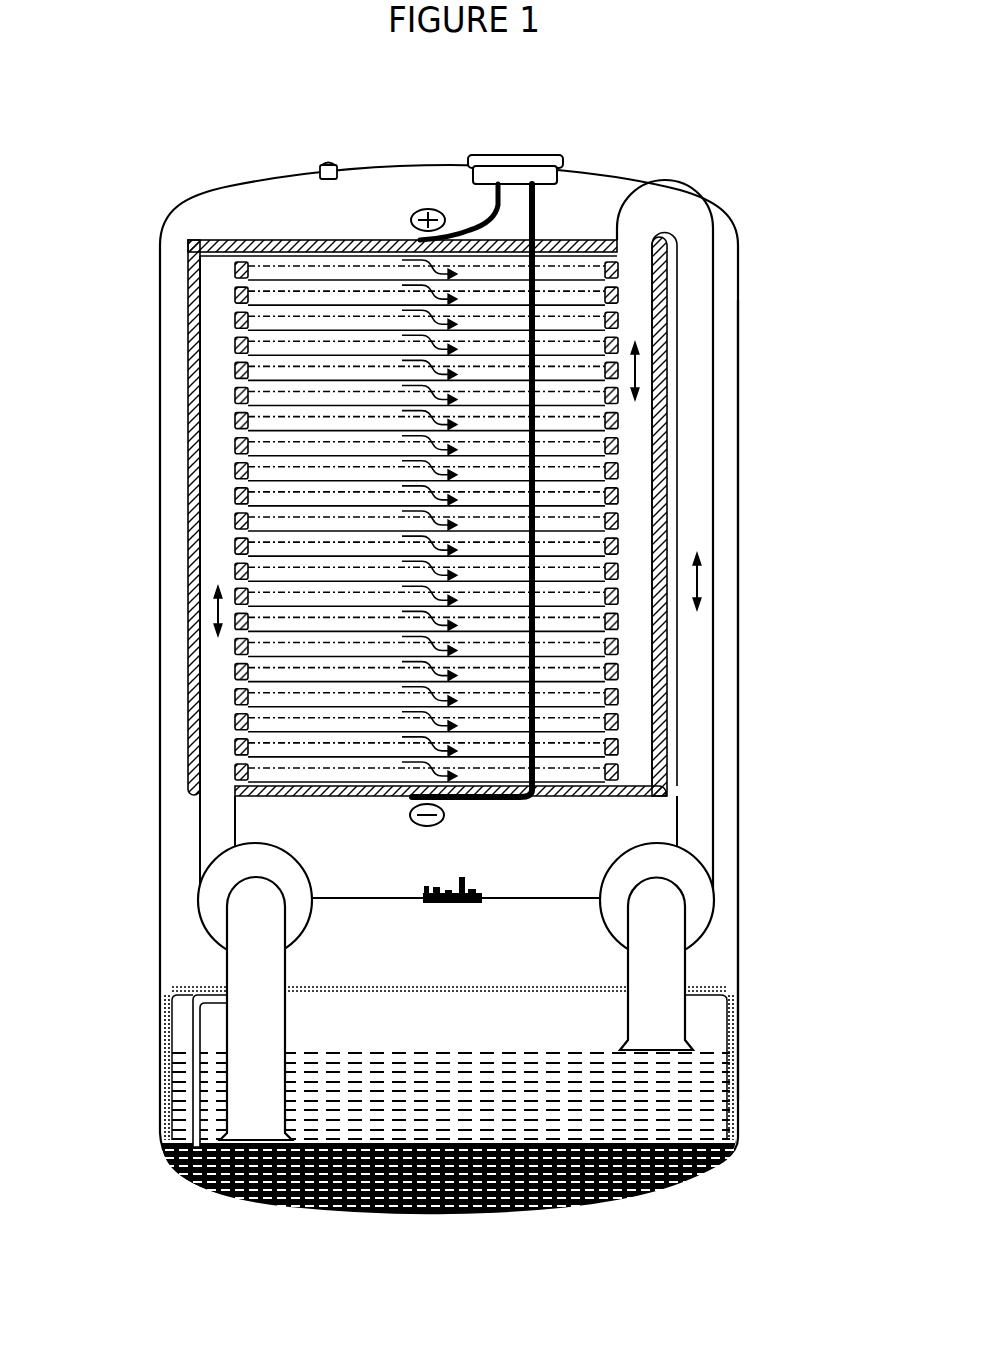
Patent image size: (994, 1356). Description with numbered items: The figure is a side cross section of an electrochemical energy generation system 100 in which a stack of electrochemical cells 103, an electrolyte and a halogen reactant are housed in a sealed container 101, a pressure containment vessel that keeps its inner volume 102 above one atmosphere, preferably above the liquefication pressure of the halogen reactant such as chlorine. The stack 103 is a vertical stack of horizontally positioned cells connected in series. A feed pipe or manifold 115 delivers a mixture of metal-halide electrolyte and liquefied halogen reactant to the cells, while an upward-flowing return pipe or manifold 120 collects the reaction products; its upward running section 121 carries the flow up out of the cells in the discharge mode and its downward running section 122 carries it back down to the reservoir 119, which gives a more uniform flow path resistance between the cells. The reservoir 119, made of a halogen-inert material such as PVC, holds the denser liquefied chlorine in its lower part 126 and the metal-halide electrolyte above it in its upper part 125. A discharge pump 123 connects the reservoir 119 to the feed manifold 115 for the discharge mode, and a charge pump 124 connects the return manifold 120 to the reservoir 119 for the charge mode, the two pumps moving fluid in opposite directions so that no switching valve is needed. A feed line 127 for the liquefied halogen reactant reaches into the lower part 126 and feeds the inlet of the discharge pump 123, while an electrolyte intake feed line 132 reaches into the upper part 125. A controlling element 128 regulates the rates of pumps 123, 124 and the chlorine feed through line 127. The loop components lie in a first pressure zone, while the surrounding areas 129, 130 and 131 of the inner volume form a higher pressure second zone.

The electrochemical energy generation system 100 is at (470, 1289).
The sealed container 101 is at (713, 210).
The inner volume 102 is at (303, 197).
The stack of electrochemical cells 103 is at (268, 292).
The feed pipe or manifold 115 is at (222, 525).
The reservoir 119 is at (173, 1010).
The return pipe or manifold 120 is at (760, 539).
The upward running section 121 is at (632, 427).
The downward running section 122 is at (692, 455).
The discharge pump 123 is at (252, 904).
The charge pump 124 is at (657, 905).
The upper part of the reservoir 125 is at (408, 1097).
The lower part of the reservoir 126 is at (408, 1152).
The feed line for the liquefied halogen reactant 127 is at (198, 1056).
The controlling element 128 is at (453, 903).
The area of the inner volume 129 is at (177, 415).
The area of the inner volume 130 is at (232, 210).
The area of the inner volume 131 is at (723, 663).
The electrolyte intake feed line 132 is at (252, 950).